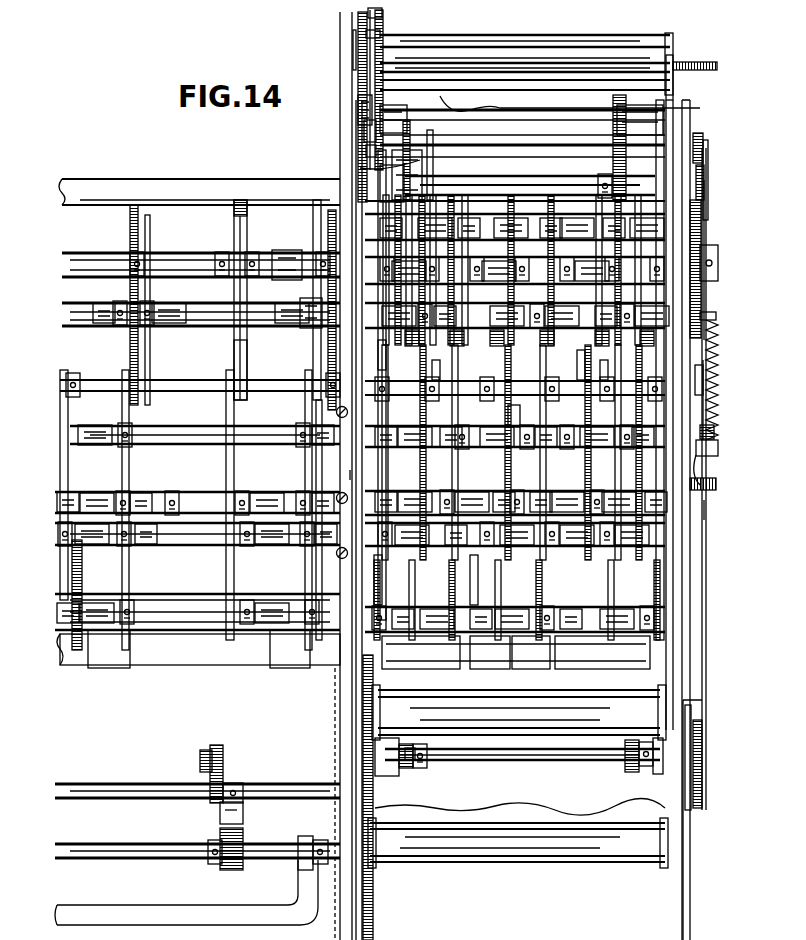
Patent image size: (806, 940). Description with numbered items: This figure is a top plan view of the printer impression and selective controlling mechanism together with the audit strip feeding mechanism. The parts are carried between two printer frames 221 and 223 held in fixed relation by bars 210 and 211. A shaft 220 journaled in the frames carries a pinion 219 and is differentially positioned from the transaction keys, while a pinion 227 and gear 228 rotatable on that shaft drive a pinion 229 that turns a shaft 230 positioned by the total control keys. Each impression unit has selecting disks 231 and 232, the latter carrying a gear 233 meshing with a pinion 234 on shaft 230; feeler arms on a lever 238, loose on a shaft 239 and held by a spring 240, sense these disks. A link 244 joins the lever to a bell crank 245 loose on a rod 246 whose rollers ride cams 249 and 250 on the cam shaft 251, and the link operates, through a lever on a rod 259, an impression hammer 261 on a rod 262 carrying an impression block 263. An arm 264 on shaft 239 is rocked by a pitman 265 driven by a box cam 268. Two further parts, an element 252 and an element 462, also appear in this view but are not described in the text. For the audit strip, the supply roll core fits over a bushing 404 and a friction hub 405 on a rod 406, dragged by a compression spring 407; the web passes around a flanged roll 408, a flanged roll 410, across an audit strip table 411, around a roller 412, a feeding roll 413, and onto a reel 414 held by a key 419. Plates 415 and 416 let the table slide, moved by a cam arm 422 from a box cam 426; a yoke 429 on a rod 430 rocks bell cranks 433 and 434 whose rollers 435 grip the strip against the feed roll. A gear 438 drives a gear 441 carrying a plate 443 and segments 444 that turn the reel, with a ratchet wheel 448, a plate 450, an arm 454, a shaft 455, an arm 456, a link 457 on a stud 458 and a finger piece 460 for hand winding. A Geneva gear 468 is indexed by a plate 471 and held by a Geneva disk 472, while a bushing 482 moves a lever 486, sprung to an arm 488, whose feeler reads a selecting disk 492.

The bar 210 is at (140, 184).
The bar 211 is at (176, 655).
The pinion 219 is at (716, 444).
The shaft 220 is at (190, 428).
The printer frame 221 is at (686, 526).
The printer frame 223 is at (334, 680).
The pinion 227 is at (714, 476).
The gear 228 is at (714, 416).
The pinion 229 is at (705, 369).
The shaft 230 is at (164, 362).
The selecting disk 231 is at (506, 409).
The selecting disk 232 is at (510, 417).
The gear 233 is at (550, 472).
The pinion 234 is at (560, 378).
The lever 238 is at (456, 489).
The shaft 239 is at (206, 494).
The spring 240 is at (466, 558).
The link 244 is at (452, 384).
The bell crank 245 is at (455, 376).
The rod 246 is at (196, 307).
The cam 249 is at (418, 224).
The cam 250 is at (458, 279).
The shaft 251 is at (196, 260).
The rack 252 is at (703, 205).
The rod 259 is at (150, 607).
The impression hammer 261 is at (448, 575).
The rod 262 is at (144, 537).
The impression block 263 is at (428, 667).
The arm 264 is at (237, 488).
The pitman 265 is at (232, 349).
The box cam 268 is at (238, 196).
The bushing 404 is at (646, 772).
The friction hub 405 is at (390, 773).
The rod 406 is at (488, 761).
The compression spring 407 is at (426, 770).
The flanged roll 408 is at (474, 698).
The flanged roll 410 is at (502, 860).
The audit strip table 411 is at (673, 96).
The roller 412 is at (458, 62).
The feeding roll 413 is at (468, 86).
The supply roll 414 is at (574, 42).
The plate 415 is at (686, 678).
The plate 416 is at (340, 196).
The key 419 is at (692, 59).
The cam arm 422 is at (594, 227).
The box cam 426 is at (592, 370).
The yoke 429 is at (566, 174).
The rod 430 is at (470, 223).
The bell crank 433 is at (620, 166).
The bell crank 434 is at (367, 156).
The roller 435 is at (424, 115).
The gear 438 is at (359, 118).
The gear 441 is at (358, 22).
The plate 443 is at (369, 40).
The segment 444 is at (370, 55).
The ratchet wheel 448 is at (382, 34).
The plate 450 is at (386, 20).
The arm 454 is at (365, 143).
The shaft 455 is at (694, 139).
The arm 456 is at (708, 138).
The link 457 is at (706, 182).
The stud 458 is at (706, 738).
The upturned extension 460 is at (704, 796).
The spring 462 is at (718, 347).
The Geneva gear 468 is at (400, 162).
The plate 471 is at (392, 332).
The Geneva disk 472 is at (318, 304).
The bushing 482 is at (316, 256).
The lever 486 is at (378, 556).
The arm 488 is at (344, 545).
The selecting disk 492 is at (350, 467).